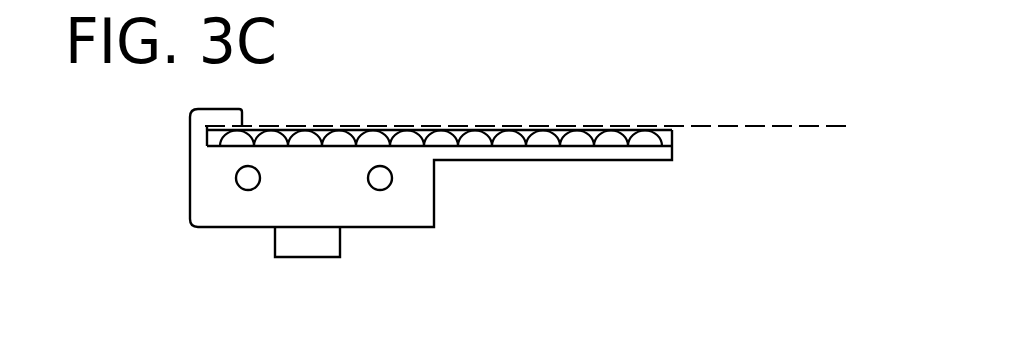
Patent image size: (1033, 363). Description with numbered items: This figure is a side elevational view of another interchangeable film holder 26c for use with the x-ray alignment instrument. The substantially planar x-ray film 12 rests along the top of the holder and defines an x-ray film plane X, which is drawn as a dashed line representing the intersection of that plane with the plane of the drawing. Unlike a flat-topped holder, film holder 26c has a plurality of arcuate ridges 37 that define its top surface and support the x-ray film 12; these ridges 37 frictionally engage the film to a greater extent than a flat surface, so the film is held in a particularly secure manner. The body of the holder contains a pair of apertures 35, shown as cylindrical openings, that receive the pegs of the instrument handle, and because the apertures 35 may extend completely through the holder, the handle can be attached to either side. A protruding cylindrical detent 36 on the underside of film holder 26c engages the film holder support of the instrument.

The x-ray film 12 is at (390, 128).
The film holder 26c is at (436, 187).
The apertures 35 is at (243, 185).
The cylindrical detent 36 is at (300, 245).
The arcuate ridges 37 is at (668, 133).
The x-ray film plane X is at (735, 123).